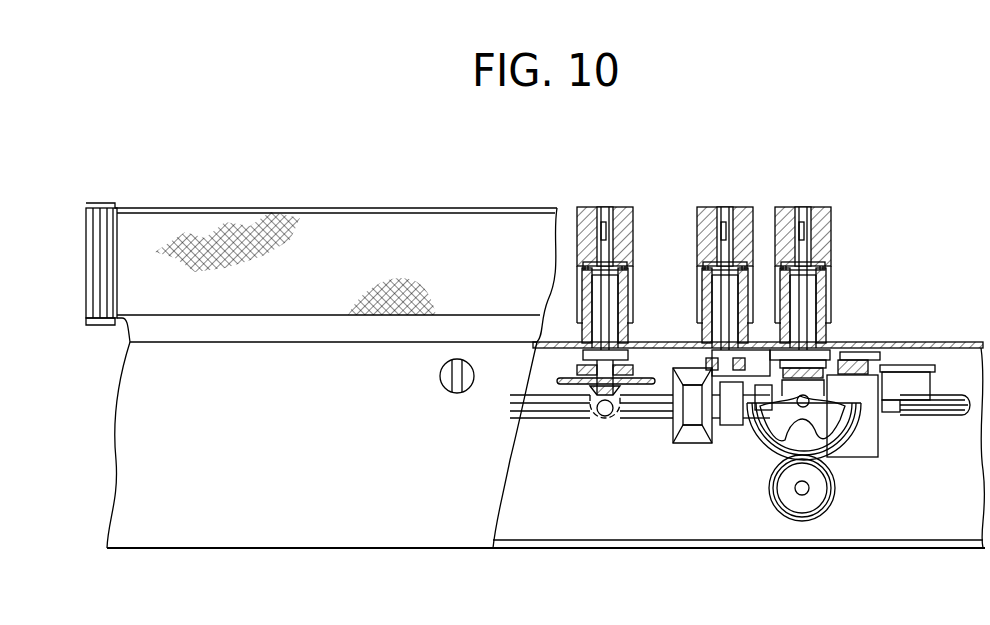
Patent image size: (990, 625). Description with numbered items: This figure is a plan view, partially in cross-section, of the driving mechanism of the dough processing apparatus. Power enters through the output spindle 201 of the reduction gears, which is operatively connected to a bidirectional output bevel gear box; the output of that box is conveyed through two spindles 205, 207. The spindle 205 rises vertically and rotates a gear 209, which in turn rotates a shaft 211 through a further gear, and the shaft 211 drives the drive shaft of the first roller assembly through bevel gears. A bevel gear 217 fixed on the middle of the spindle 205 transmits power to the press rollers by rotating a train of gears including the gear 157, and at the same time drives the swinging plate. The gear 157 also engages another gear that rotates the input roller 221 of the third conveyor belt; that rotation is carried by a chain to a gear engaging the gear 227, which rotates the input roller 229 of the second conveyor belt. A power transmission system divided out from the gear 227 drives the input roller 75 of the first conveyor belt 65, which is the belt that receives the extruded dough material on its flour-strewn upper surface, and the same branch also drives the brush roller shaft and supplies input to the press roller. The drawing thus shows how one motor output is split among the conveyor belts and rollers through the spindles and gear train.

The first conveyor belt 65 is at (377, 228).
The input roller of the first conveyor belt 75 is at (628, 208).
The input roller of the second conveyor belt 229 is at (714, 208).
The input roller of the third conveyor belt 221 is at (795, 208).
The gear 227 is at (697, 372).
The output spindle of the reduction gears 201 is at (540, 405).
The spindle 207 is at (945, 405).
The spindle 205 is at (783, 452).
The gear 209 is at (818, 443).
The bevel gear 217 is at (790, 402).
The gear 157 is at (806, 408).
The shaft 211 is at (797, 490).